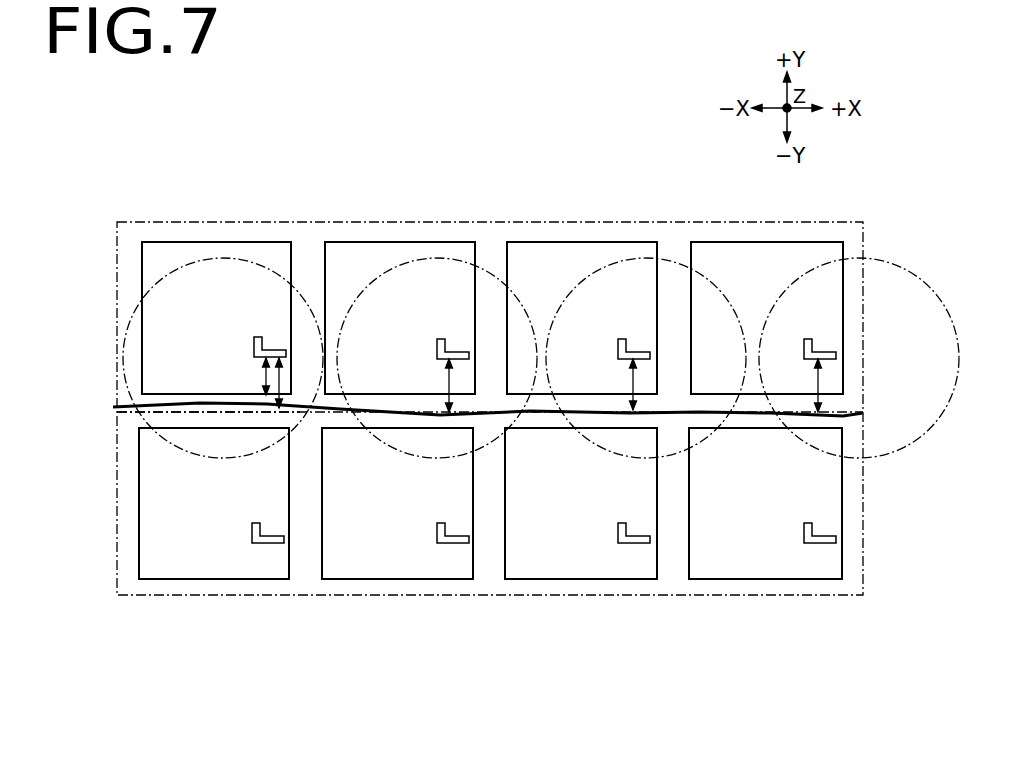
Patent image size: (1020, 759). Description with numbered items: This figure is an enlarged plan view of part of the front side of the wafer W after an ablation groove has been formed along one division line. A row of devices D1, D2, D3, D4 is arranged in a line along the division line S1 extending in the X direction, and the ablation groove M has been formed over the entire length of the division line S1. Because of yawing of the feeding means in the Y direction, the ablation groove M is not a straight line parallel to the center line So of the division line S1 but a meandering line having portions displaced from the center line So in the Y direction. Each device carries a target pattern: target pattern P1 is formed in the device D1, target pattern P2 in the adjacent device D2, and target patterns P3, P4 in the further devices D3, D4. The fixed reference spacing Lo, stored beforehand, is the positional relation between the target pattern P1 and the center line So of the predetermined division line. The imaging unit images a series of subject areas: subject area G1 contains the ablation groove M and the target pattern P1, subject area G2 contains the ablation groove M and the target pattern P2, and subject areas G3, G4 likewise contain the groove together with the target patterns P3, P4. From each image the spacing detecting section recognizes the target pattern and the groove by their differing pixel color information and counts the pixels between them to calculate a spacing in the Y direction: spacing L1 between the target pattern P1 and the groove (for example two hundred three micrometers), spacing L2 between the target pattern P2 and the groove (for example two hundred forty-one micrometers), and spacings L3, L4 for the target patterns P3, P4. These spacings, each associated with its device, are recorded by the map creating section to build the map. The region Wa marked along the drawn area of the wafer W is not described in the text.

The device D1 is at (156, 250).
The device D2 is at (346, 250).
The device D3 is at (569, 250).
The device D4 is at (744, 250).
The target pattern P1 is at (254, 347).
The target pattern P2 is at (455, 346).
The target pattern P3 is at (636, 346).
The target pattern P4 is at (822, 346).
The spacing L1 is at (263, 383).
The spacing L2 is at (447, 383).
The spacing L3 is at (631, 383).
The spacing L4 is at (816, 383).
The fixed reference spacing Lo is at (282, 382).
The ablation groove M is at (153, 397).
The center line So is at (257, 413).
The subject area G1 is at (181, 453).
The subject area G2 is at (345, 408).
The subject area G3 is at (553, 405).
The subject area G4 is at (881, 458).
The division line S1 is at (717, 418).
The wafer region Wa is at (165, 596).
The wafer W is at (272, 628).